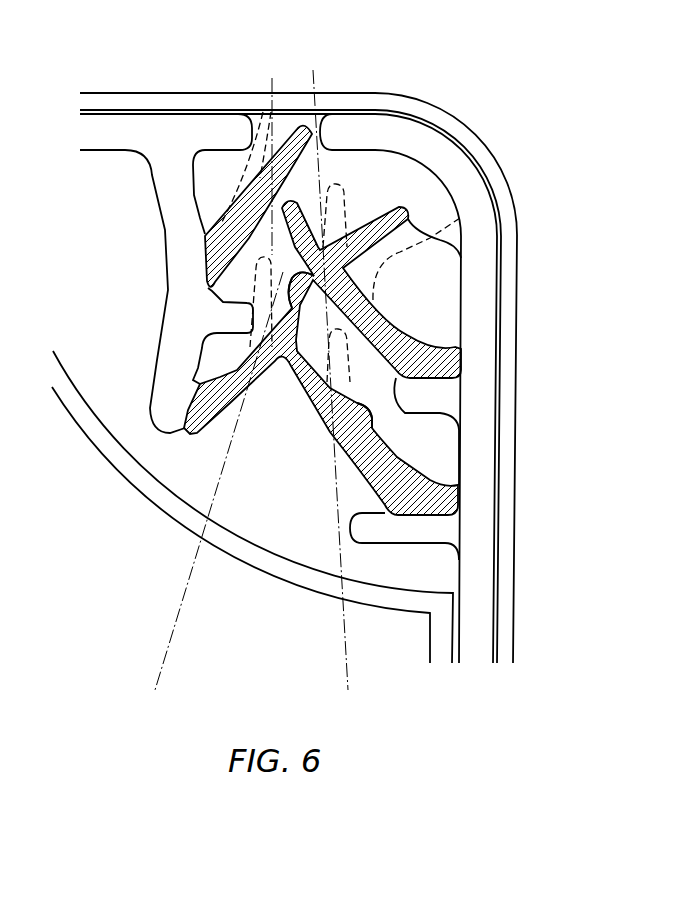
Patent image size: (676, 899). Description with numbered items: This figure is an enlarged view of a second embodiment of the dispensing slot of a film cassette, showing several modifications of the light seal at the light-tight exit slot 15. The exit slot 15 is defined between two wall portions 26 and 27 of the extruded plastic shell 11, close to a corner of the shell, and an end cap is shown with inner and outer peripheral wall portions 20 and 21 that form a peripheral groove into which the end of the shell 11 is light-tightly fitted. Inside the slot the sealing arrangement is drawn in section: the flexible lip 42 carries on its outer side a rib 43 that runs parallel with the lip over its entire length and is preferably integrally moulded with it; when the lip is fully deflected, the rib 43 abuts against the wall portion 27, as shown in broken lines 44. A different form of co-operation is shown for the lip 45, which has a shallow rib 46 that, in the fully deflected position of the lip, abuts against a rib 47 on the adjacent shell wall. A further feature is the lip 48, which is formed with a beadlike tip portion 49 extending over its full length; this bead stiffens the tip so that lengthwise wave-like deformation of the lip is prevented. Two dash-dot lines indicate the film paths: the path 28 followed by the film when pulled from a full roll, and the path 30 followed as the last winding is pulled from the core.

The light-tight exit slot 15 is at (294, 82).
The flexible lip 42 is at (305, 226).
The rib 43 is at (410, 222).
The broken lines 44 is at (413, 243).
The wall portion 26 is at (180, 278).
The beadlike tip portion 49 is at (293, 282).
The lip 48 is at (236, 366).
The wall portion 27 is at (480, 319).
The lip 45 is at (390, 381).
The rib 47 is at (416, 401).
The shallow rib 46 is at (373, 424).
The path 30 is at (188, 575).
The path 28 is at (349, 647).
The inner peripheral wall portion 20 is at (437, 660).
The shell 11 is at (473, 650).
The outer peripheral wall portion 21 is at (503, 657).